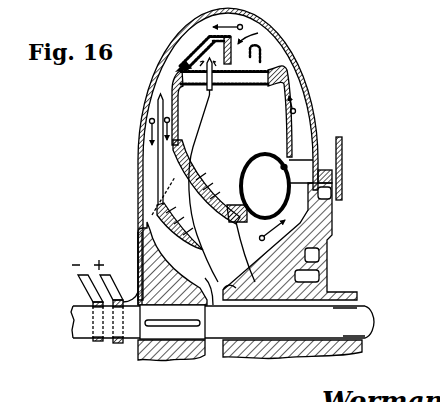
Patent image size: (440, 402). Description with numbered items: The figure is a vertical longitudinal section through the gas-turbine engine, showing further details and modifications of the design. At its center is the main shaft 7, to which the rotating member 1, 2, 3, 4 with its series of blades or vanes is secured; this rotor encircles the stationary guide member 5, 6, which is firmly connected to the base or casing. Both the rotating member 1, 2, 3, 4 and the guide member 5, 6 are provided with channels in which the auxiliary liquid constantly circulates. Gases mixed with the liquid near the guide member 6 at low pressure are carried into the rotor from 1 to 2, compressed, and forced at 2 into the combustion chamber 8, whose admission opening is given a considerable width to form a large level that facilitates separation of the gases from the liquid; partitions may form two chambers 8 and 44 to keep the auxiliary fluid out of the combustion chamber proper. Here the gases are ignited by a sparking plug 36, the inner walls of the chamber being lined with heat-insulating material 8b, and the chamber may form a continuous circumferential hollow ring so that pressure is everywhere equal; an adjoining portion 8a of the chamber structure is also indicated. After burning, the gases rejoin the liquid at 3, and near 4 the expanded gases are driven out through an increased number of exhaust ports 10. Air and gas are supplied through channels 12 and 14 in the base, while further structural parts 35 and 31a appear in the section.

The rotor 1 is at (300, 152).
The rotor 2 is at (265, 43).
The rotor 3 is at (173, 62).
The rotor 4 is at (250, 291).
The stationary guide member 5 is at (265, 208).
The stationary guide member 6 is at (330, 202).
The main shaft 7 is at (218, 301).
The combustion chamber 8 is at (207, 60).
The coil tube section 8a is at (227, 83).
The heat-insulating material 8b is at (212, 52).
The exhaust ports 10 is at (207, 216).
The air channel 12 is at (328, 250).
The gas channel 14 is at (328, 273).
The tube end cap 31a is at (370, 330).
The electrode 35 is at (160, 178).
The sparking plug 36 is at (213, 88).
The chamber 44 is at (247, 56).